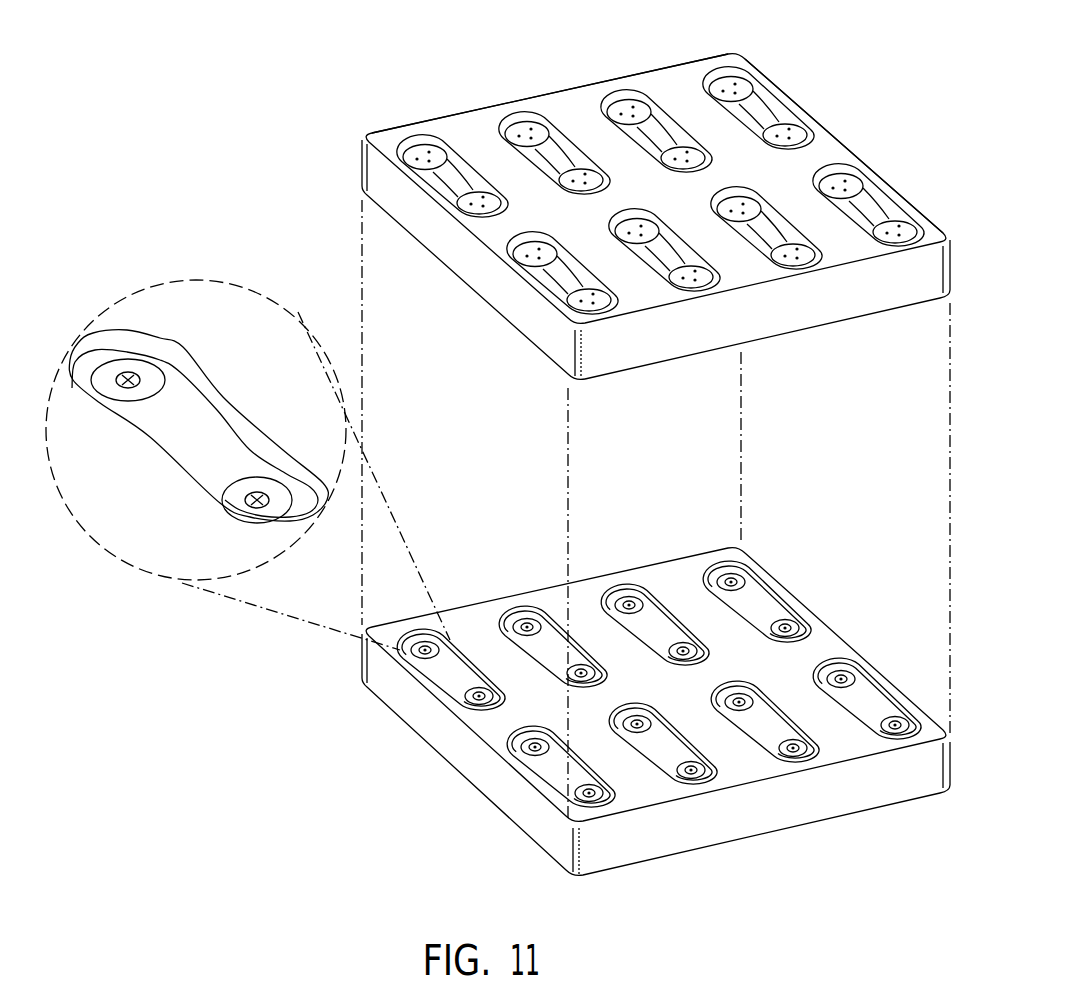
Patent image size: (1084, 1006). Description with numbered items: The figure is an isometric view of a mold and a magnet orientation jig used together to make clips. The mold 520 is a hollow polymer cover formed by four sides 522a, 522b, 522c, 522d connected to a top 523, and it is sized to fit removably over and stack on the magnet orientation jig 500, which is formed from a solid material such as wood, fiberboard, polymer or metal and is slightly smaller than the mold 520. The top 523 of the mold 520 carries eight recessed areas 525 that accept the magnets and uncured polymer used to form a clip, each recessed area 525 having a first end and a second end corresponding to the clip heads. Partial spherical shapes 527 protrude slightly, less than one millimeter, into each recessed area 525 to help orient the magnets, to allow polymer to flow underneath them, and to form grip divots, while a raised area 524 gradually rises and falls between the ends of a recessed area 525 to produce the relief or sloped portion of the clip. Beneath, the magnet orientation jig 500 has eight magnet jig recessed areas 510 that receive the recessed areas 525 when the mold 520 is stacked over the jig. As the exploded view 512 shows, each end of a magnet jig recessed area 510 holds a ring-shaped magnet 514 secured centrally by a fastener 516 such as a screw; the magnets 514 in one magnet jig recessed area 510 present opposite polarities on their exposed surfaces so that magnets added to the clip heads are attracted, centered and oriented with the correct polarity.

The magnet orientation jig 500 is at (472, 765).
The magnet jig recessed area 510 is at (207, 410).
The exploded view 512 is at (300, 316).
The magnet 514 is at (225, 508).
The fastener 516 is at (245, 497).
The mold 520 is at (622, 348).
The side 522a is at (882, 176).
The side 522b is at (838, 318).
The side 522c is at (432, 236).
The side 522d is at (548, 90).
The top 523 is at (822, 145).
The raised area 524 is at (764, 110).
The recessed area 525 is at (518, 112).
The partial spherical shape 527 is at (842, 184).